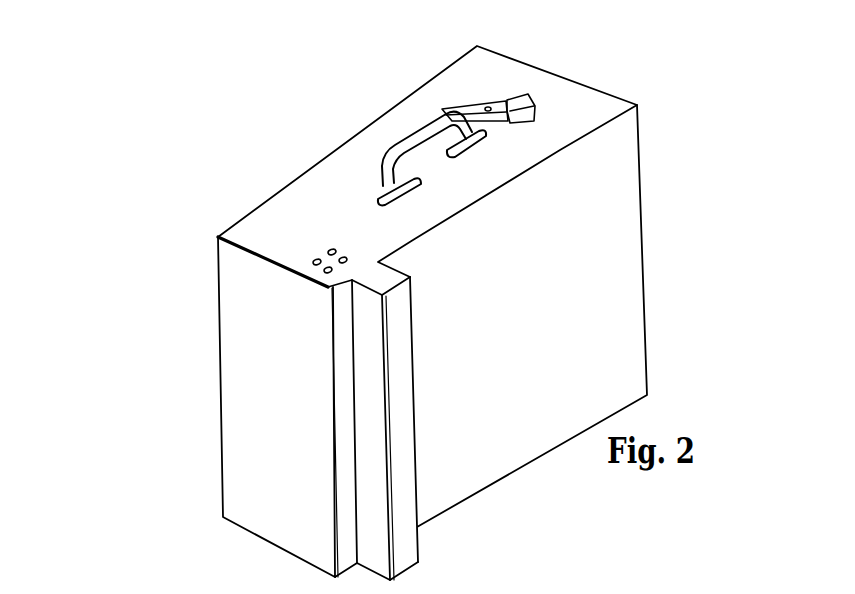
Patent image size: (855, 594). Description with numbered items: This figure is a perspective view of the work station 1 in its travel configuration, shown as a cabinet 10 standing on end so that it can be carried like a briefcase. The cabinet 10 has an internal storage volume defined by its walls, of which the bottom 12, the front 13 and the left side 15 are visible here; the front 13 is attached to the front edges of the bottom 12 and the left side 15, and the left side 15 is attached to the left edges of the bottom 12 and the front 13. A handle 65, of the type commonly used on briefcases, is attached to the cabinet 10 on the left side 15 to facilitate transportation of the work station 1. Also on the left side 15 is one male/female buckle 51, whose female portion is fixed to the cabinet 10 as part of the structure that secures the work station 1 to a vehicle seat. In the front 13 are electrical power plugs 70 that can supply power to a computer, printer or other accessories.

The work station 1 is at (100, 295).
The cabinet 10 is at (673, 172).
The bottom 12 is at (583, 312).
The front 13 is at (247, 347).
The left side 15 is at (302, 200).
The male/female buckle 51 is at (532, 95).
The handle 65 is at (403, 143).
The electrical power plug 70 is at (288, 244).